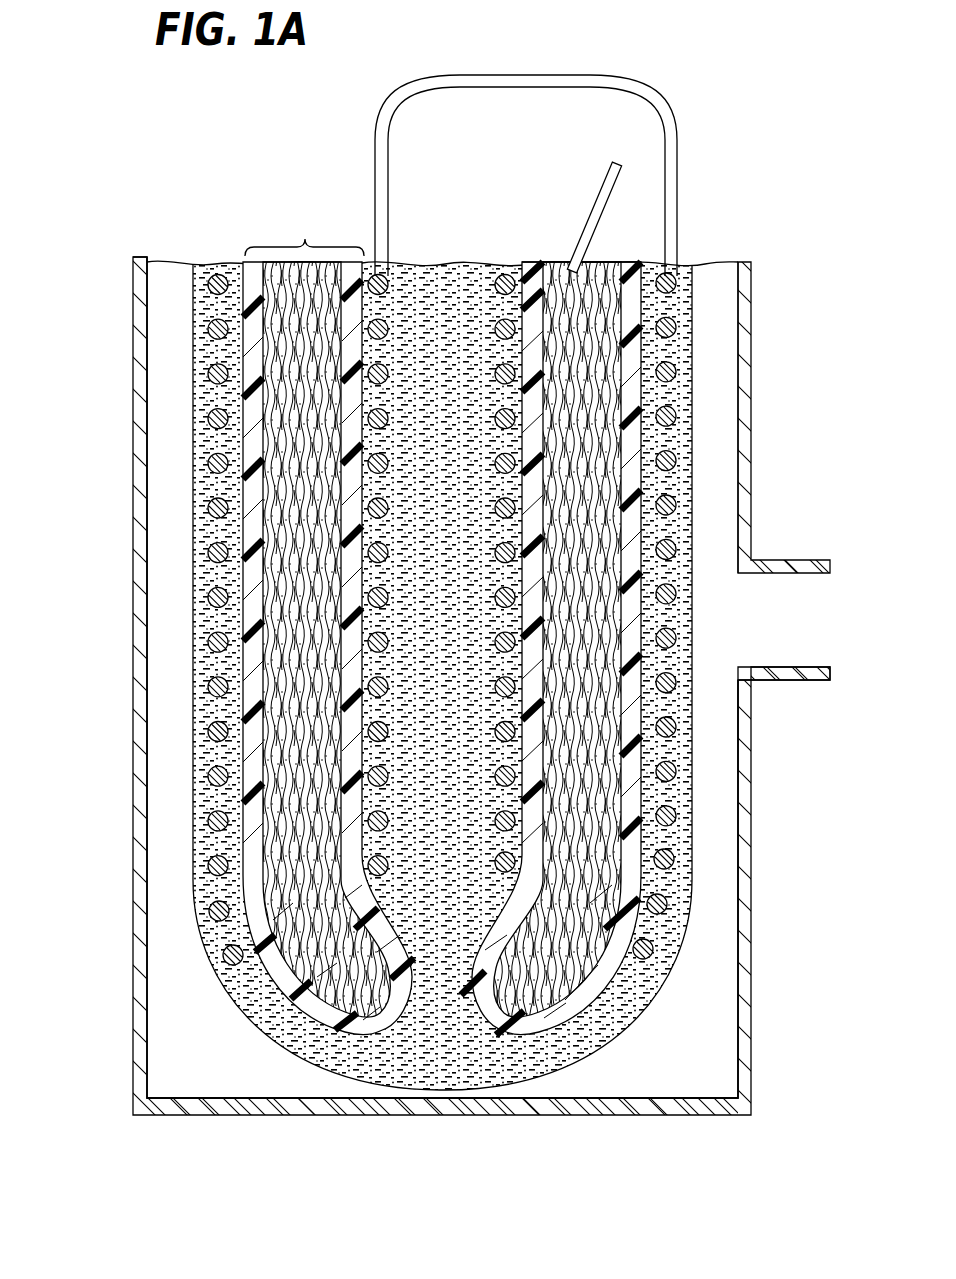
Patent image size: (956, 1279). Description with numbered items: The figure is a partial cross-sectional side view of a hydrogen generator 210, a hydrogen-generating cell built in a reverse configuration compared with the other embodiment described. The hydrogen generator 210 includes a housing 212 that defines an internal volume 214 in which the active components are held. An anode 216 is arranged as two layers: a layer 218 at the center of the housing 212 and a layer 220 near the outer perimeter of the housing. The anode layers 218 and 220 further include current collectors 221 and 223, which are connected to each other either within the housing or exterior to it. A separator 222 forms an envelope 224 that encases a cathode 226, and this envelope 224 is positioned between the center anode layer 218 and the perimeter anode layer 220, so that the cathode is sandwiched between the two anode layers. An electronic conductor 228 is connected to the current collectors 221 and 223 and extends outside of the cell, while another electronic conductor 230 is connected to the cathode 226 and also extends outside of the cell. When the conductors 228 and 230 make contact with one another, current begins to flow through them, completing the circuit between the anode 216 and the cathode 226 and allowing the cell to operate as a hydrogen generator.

The hydrogen generator 210 is at (140, 193).
The housing 212 is at (133, 498).
The internal volume 214 is at (168, 561).
The anode 216 is at (213, 279).
The center anode layer 218 is at (400, 272).
The perimeter anode layer 220 is at (213, 338).
The current collector 221 is at (203, 422).
The separator 222 is at (250, 662).
The current collector 223 is at (515, 270).
The envelope 224 is at (304, 233).
The cathode 226 is at (300, 698).
The electronic conductor 228 is at (677, 175).
The electronic conductor 230 is at (617, 160).